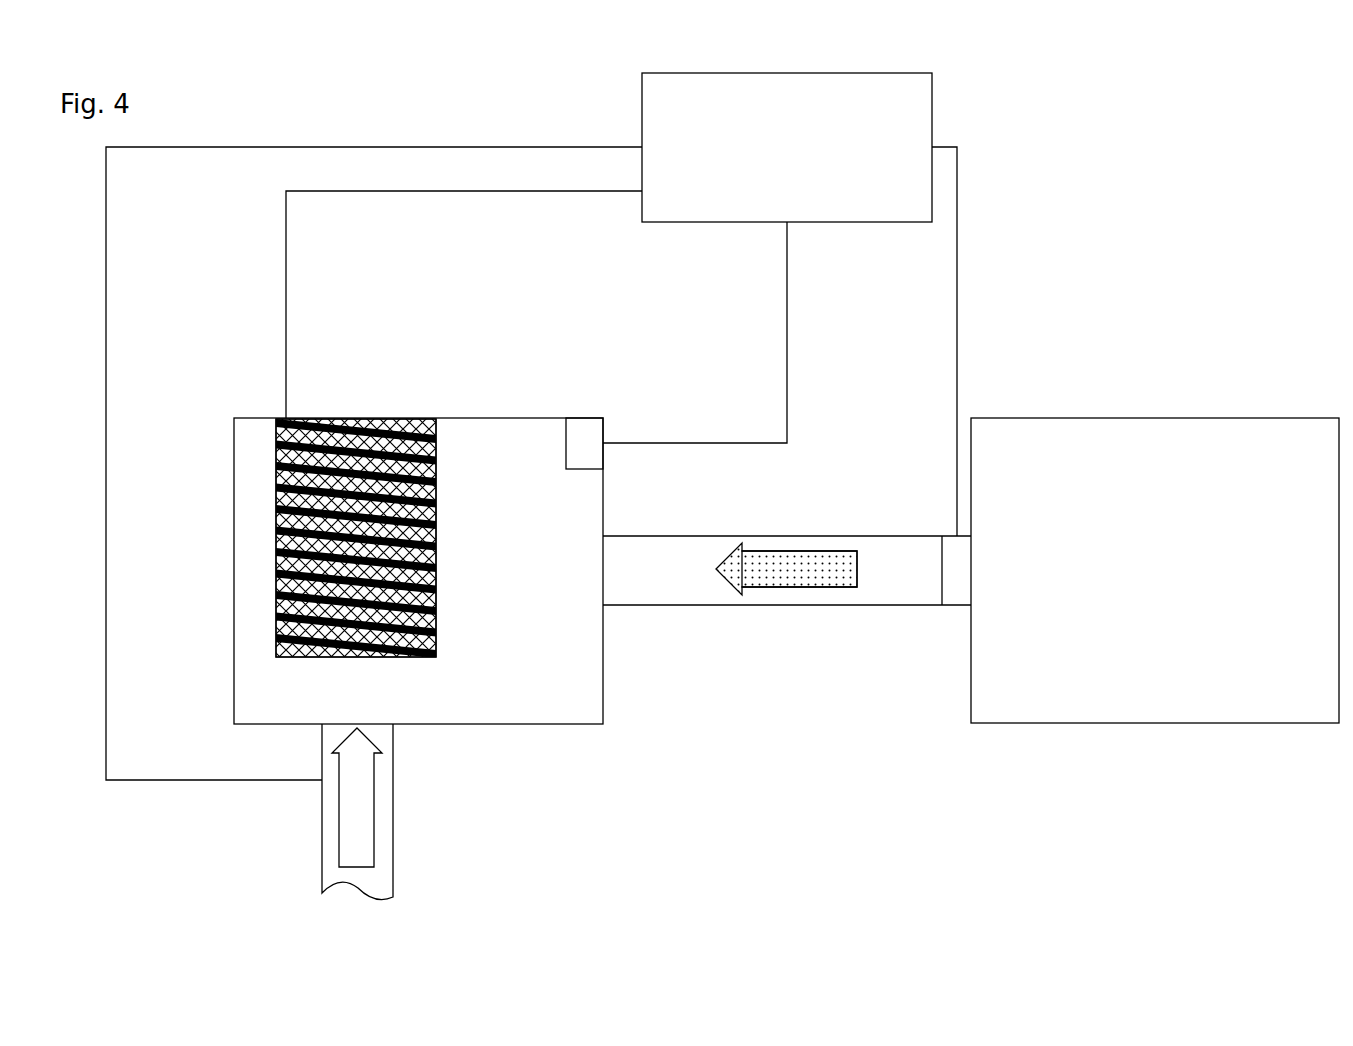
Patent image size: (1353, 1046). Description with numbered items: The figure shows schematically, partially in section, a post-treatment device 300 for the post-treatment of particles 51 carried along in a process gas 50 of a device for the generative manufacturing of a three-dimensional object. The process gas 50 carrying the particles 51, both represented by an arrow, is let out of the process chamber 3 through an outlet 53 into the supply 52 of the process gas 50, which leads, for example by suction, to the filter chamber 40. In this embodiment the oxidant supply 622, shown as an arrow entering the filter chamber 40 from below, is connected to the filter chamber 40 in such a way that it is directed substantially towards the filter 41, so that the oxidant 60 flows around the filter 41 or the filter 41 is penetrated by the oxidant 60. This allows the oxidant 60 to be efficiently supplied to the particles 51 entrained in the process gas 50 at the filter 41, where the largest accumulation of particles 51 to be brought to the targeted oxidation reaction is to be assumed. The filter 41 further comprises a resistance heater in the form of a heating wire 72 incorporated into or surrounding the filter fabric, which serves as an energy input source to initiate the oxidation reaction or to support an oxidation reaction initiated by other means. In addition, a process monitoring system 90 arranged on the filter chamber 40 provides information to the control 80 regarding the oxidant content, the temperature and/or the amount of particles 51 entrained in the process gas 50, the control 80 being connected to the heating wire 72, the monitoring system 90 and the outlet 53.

The post-treatment device 300 is at (405, 121).
The control 80 is at (780, 304).
The filter chamber 40 is at (233, 658).
The filter 41 is at (425, 420).
The heating wire 72 is at (314, 420).
The process monitoring system 90 is at (586, 423).
The supply of the process gas 52 is at (803, 536).
The outlet 53 is at (957, 605).
The process gas 50 is at (757, 578).
The particles 51 is at (845, 560).
The process chamber 3 is at (1155, 570).
The oxidant supply 622 is at (382, 843).
The oxidant 60 is at (355, 785).